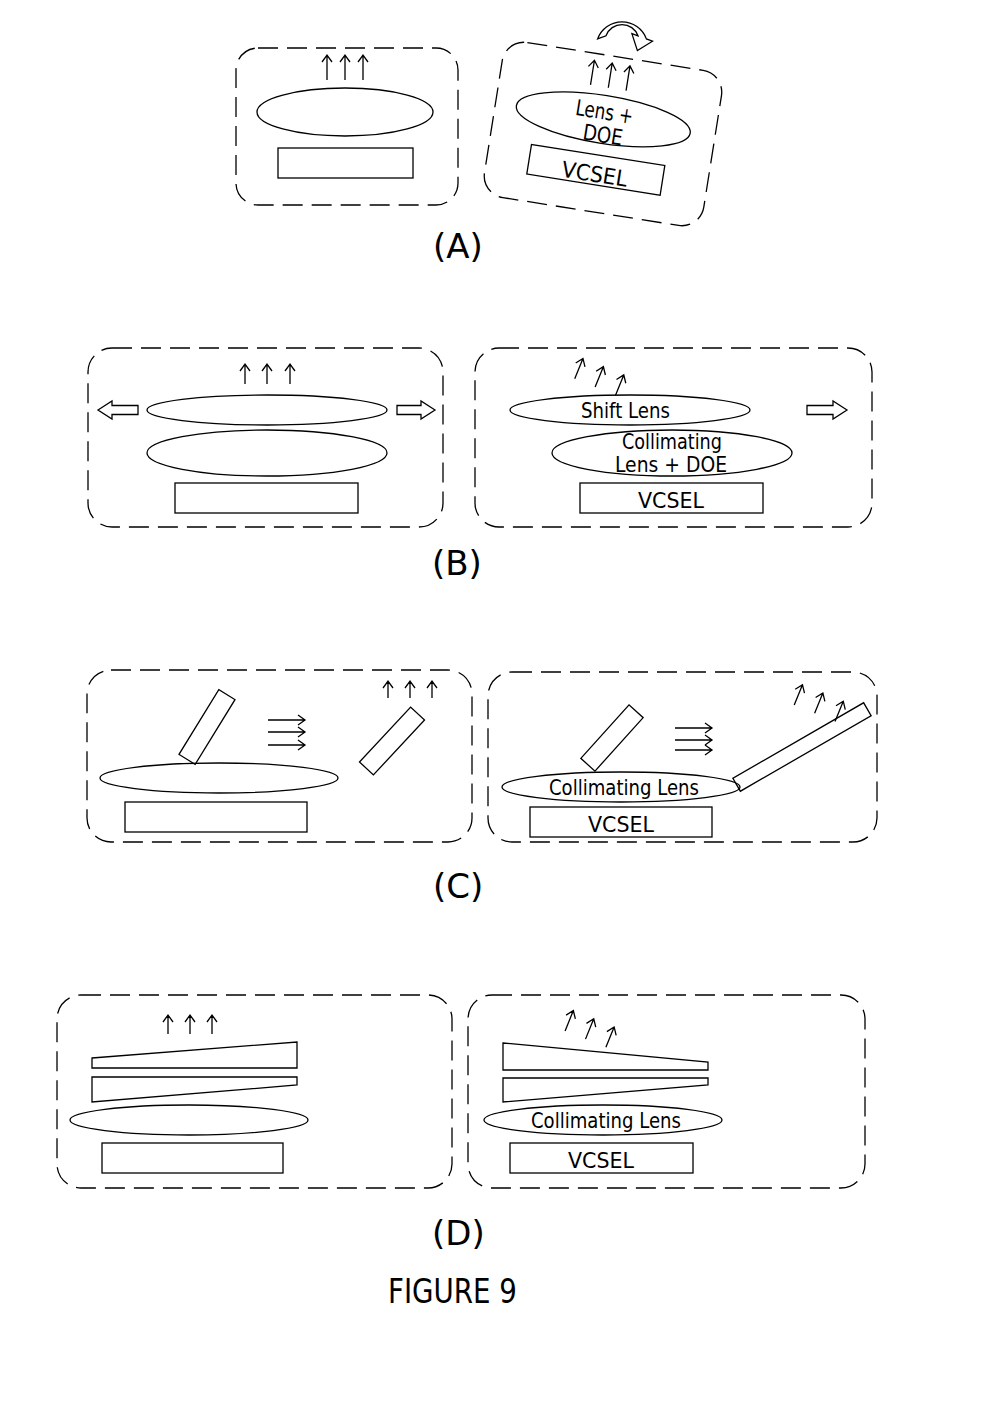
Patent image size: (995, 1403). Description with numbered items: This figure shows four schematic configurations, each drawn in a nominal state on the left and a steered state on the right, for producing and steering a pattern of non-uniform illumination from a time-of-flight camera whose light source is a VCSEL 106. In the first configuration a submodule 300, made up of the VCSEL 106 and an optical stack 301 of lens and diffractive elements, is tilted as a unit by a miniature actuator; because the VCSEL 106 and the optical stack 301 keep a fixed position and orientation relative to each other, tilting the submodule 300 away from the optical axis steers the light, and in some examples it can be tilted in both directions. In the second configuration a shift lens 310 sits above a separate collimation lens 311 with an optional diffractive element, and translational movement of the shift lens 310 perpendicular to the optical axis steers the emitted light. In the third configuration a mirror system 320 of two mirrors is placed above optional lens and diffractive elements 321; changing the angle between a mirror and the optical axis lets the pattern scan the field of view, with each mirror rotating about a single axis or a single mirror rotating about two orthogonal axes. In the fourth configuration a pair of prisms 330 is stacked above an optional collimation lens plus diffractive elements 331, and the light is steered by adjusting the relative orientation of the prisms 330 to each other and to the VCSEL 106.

The submodule 300 is at (236, 108).
The optical stack 301 is at (278, 128).
The VCSEL 106 is at (278, 163).
The shift lens 310 is at (158, 401).
The collimation lens 311 is at (147, 452).
The mirror system 320 is at (387, 730).
The lens and diffractive elements 321 is at (314, 790).
The pair of prisms 330 is at (300, 1056).
The collimation lens plus diffractive elements 331 is at (310, 1120).